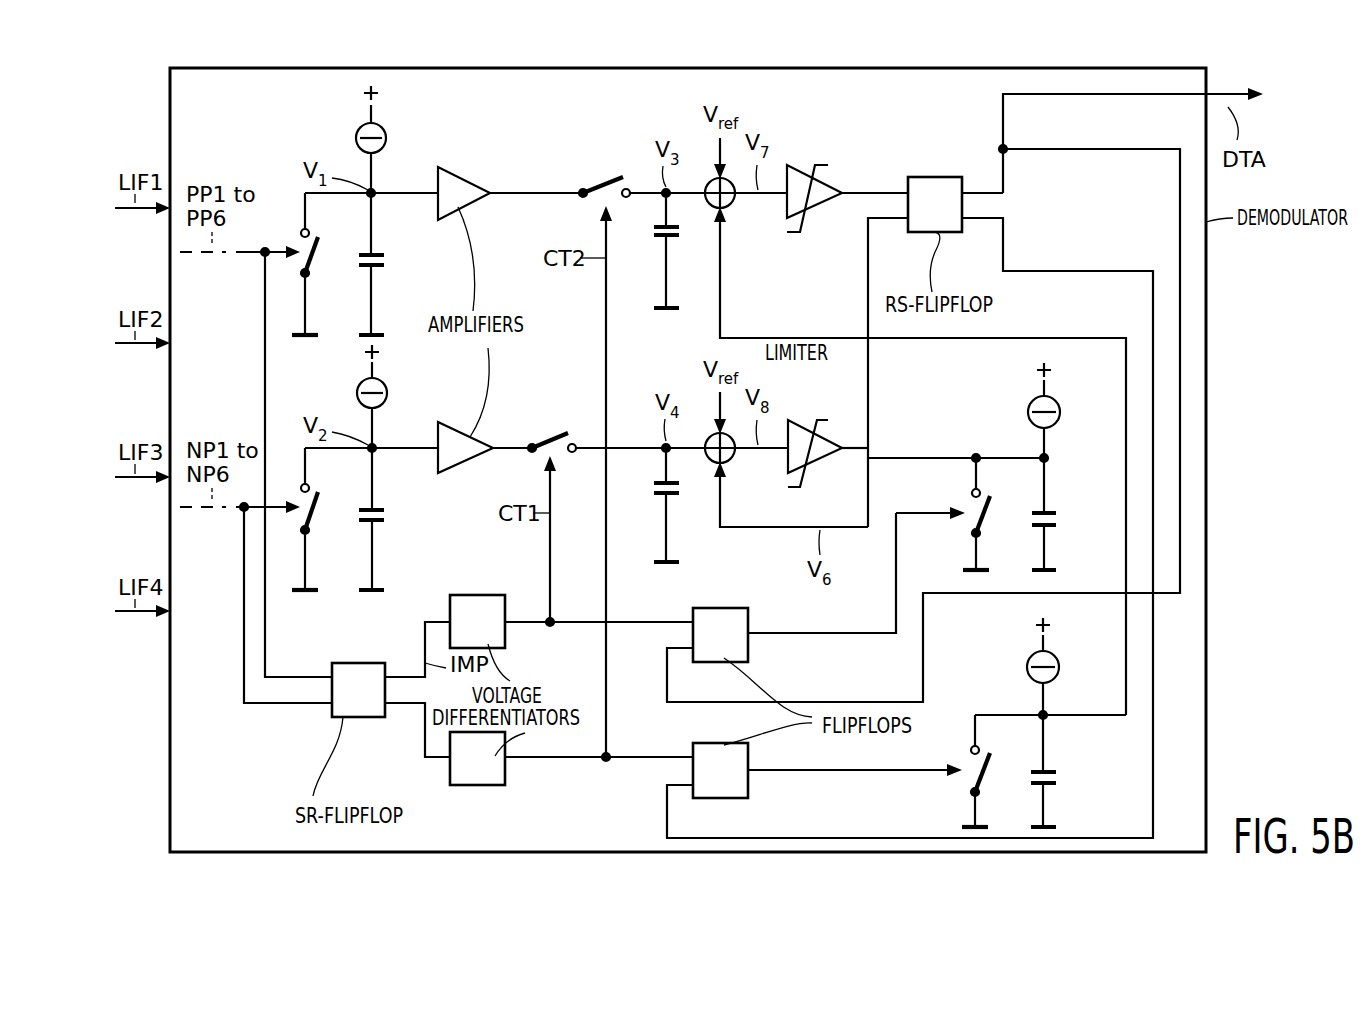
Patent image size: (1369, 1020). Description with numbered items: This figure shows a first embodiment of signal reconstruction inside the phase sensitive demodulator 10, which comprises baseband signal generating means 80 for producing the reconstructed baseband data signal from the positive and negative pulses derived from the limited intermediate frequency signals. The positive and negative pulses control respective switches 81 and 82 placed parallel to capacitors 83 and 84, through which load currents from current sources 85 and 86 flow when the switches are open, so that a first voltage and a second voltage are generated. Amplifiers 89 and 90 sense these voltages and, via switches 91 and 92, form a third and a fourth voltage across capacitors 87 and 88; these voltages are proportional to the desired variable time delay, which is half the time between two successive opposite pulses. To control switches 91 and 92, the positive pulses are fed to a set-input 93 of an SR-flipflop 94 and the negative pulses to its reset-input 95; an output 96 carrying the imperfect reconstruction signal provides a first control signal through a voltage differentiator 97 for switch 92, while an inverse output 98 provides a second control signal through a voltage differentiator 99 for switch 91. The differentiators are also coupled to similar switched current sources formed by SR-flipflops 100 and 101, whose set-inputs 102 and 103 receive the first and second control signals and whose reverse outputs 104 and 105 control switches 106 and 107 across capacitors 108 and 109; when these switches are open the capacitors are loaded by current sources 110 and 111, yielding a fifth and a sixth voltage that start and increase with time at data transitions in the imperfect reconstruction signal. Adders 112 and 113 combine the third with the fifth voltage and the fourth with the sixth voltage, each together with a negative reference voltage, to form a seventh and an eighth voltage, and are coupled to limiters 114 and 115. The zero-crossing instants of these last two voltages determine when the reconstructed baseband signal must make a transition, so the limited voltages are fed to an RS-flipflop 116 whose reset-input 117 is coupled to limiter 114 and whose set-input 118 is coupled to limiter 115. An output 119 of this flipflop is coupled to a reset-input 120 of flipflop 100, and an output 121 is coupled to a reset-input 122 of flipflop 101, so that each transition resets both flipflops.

The phase sensitive demodulator 10 is at (1206, 375).
The baseband signal generating means 80 is at (270, 780).
The switch 81 is at (318, 258).
The switch 82 is at (318, 514).
The capacitor 83 is at (388, 260).
The capacitor 84 is at (388, 517).
The current source 85 is at (356, 138).
The current source 86 is at (357, 393).
The capacitor 87 is at (652, 236).
The capacitor 88 is at (652, 493).
The amplifier 89 is at (460, 178).
The amplifier 90 is at (461, 436).
The switch 91 is at (609, 178).
The switch 92 is at (551, 430).
The set-input 93 is at (330, 677).
The SR-flipflop 94 is at (358, 717).
The reset-input 95 is at (330, 702).
The output 96 is at (387, 677).
The voltage differentiator 97 is at (480, 595).
The inverse output 98 is at (387, 703).
The voltage differentiator 99 is at (480, 785).
The SR-flipflop 100 is at (730, 607).
The SR-flipflop 101 is at (748, 751).
The set-input 102 is at (693, 622).
The set-input 103 is at (693, 757).
The reverse output 104 is at (750, 640).
The reverse output 105 is at (750, 776).
The switch 106 is at (975, 522).
The switch 107 is at (965, 777).
The capacitor 108 is at (1060, 522).
The capacitor 109 is at (1060, 781).
The current source 110 is at (1028, 411).
The current source 111 is at (1027, 666).
The adder 112 is at (733, 205).
The adder 113 is at (733, 460).
The limiter 114 is at (800, 165).
The limiter 115 is at (805, 420).
The RS-flipflop 116 is at (931, 178).
The reset-input 117 is at (908, 190).
The set-input 118 is at (908, 226).
The output 119 is at (962, 190).
The reset-input 120 is at (690, 645).
The output 121 is at (962, 226).
The reset-input 122 is at (690, 782).